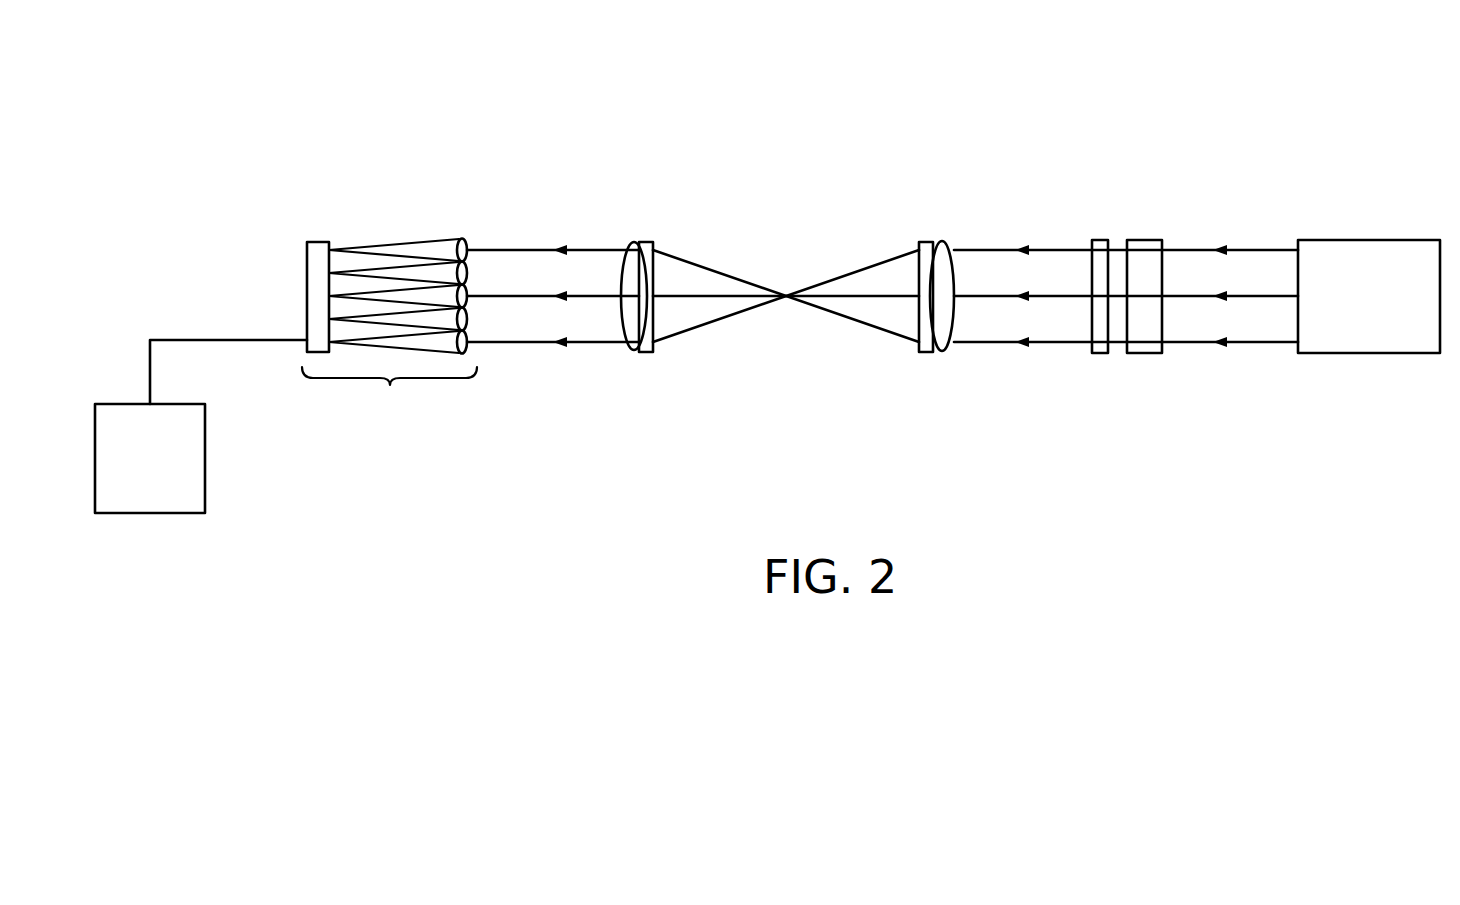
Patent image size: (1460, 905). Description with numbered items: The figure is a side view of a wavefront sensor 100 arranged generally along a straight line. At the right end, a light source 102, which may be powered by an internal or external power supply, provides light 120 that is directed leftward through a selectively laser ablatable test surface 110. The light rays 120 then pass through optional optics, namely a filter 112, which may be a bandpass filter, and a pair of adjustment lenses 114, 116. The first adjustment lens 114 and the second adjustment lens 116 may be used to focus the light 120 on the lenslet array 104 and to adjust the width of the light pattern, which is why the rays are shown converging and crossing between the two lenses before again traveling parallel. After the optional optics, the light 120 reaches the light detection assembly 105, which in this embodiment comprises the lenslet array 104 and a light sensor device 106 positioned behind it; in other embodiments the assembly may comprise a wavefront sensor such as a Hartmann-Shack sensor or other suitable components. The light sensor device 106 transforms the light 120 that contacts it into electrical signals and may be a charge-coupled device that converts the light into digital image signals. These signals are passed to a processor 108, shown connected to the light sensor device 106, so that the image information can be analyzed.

The wavefront sensor 100 is at (968, 118).
The light source 102 is at (1366, 240).
The lenslet array 104 is at (462, 239).
The light detection assembly 105 is at (389, 331).
The light sensor device 106 is at (316, 242).
The processor 108 is at (195, 460).
The selectively laser ablatable test surface 110 is at (1147, 240).
The filter 112 is at (1098, 240).
The adjustment lens 114 is at (940, 241).
The adjustment lens 116 is at (646, 242).
The light 120 is at (1247, 296).